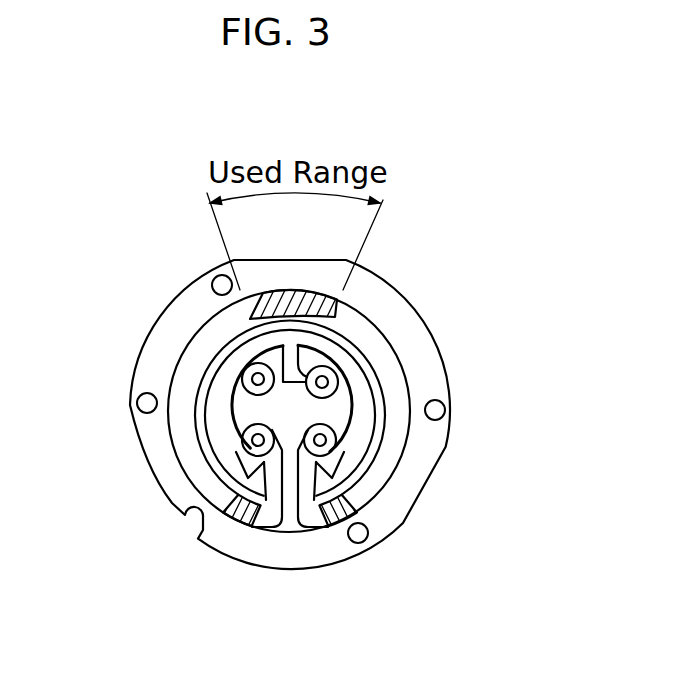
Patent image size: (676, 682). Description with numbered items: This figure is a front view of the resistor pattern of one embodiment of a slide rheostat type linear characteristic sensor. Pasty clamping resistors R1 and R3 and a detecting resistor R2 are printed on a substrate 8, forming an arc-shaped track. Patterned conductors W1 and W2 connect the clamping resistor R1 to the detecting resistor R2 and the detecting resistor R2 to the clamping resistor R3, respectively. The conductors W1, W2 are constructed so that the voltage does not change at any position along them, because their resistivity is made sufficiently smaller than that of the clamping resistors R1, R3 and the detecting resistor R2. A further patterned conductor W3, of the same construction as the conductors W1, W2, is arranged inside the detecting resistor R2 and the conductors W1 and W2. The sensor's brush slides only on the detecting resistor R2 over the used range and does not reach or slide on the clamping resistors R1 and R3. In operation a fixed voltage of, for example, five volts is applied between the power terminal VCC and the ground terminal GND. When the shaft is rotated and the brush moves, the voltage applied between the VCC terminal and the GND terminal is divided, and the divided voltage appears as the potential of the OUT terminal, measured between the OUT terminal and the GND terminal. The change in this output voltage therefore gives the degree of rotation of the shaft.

The substrate 8 is at (165, 508).
The clamping resistor R1 is at (323, 513).
The detecting resistor R2 is at (270, 293).
The clamping resistor R3 is at (248, 514).
The patterned conductor W1 is at (327, 438).
The patterned conductor W2 is at (195, 478).
The patterned conductor W3 is at (218, 377).
The OUT terminal OUT is at (324, 378).
The ground terminal GND is at (242, 450).
The power terminal VCC is at (387, 465).